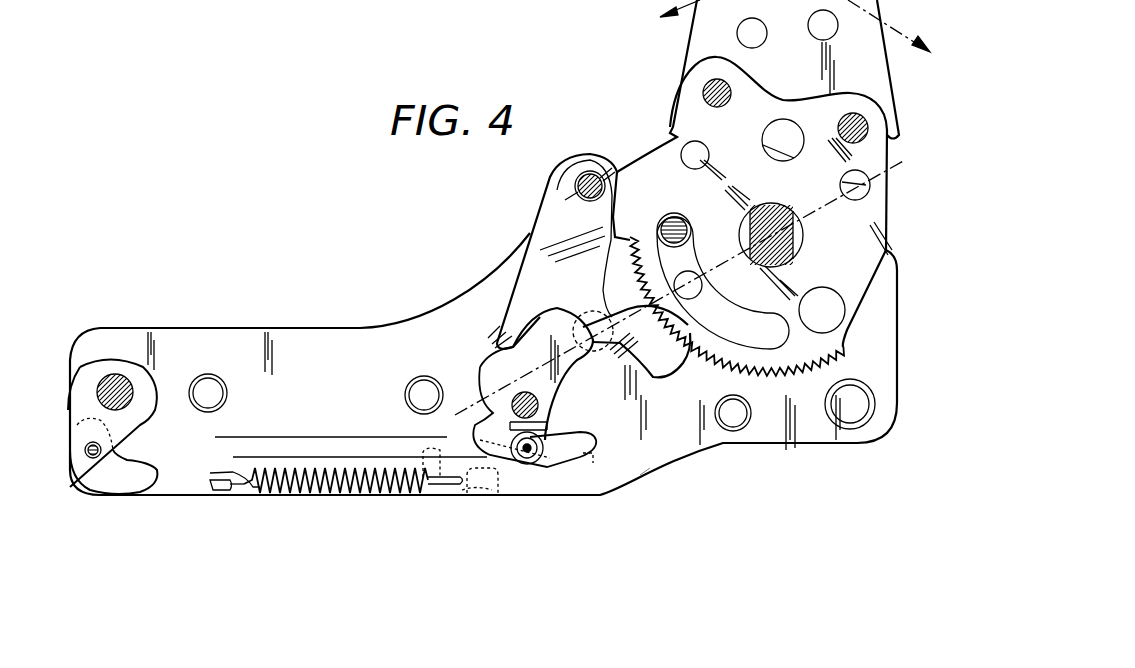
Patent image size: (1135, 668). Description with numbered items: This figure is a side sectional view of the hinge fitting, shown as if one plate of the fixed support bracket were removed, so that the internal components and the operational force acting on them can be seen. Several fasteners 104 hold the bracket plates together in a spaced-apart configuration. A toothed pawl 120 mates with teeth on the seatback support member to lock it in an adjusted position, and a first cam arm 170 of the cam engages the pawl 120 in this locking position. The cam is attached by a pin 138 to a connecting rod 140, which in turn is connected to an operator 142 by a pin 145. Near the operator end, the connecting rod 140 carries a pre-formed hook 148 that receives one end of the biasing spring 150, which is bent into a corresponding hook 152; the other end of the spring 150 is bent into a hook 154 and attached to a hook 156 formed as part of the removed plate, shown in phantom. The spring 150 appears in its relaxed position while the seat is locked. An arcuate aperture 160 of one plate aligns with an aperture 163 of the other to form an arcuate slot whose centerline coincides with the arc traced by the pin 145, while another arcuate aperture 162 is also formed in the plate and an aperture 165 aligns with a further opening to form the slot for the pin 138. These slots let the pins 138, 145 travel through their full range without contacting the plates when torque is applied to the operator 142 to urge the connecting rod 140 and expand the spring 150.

The fasteners 104 is at (596, 312).
The pawl 120 is at (557, 227).
The pin 138 is at (542, 447).
The connecting rod 140 is at (150, 463).
The operator 142 is at (62, 497).
The pin 145 is at (107, 477).
The hook 148 is at (220, 490).
The biasing spring 150 is at (300, 493).
The hook 152 is at (240, 490).
The hook 154 is at (447, 480).
The hook 156 is at (470, 490).
The arcuate aperture 160 is at (600, 435).
The arcuate aperture 162 is at (763, 378).
The aperture 163 is at (615, 470).
The aperture 165 is at (90, 465).
The first cam arm 170 is at (560, 397).